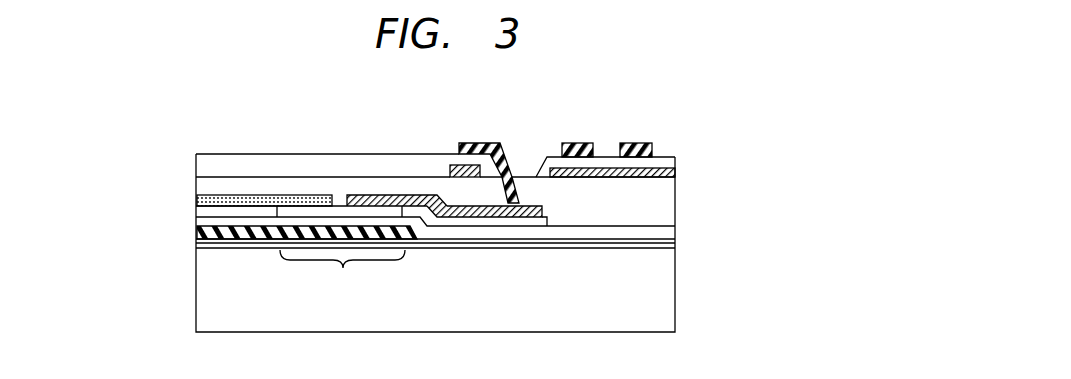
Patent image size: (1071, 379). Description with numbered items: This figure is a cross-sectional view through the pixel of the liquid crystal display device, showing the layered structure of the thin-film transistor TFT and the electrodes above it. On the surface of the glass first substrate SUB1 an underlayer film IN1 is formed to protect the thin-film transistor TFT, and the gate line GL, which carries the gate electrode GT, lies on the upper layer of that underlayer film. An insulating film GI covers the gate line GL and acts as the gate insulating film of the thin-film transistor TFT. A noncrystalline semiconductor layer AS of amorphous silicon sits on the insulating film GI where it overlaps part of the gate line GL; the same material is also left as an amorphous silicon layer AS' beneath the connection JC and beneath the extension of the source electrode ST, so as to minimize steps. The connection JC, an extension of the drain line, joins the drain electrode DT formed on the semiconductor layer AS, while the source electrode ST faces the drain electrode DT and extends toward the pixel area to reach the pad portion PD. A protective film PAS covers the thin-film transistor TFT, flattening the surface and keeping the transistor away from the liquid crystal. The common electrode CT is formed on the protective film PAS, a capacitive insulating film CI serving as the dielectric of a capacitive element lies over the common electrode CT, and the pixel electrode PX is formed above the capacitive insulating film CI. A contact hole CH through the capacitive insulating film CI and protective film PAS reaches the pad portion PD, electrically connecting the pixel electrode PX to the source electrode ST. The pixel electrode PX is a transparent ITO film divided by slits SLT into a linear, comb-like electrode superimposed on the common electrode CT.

The first substrate SUB1 is at (676, 298).
The undercoat insulating film IN1 is at (678, 246).
The insulating film GI is at (678, 232).
The gate line GL is at (233, 233).
The gate electrode GT is at (298, 235).
The thin-film transistor TFT is at (342, 273).
The amorphous silicon layer AS' is at (339, 292).
The drain electrode DT is at (290, 193).
The connection JC is at (235, 193).
The semiconductor layer AS is at (336, 155).
The source electrode ST is at (382, 195).
The pad portion PD is at (460, 217).
The protective film PAS is at (205, 188).
The common electrode CT is at (446, 165).
The capacitive insulating film CI is at (205, 167).
The contact hole CH is at (529, 175).
The pixel electrode PX is at (474, 142).
The slit SLT is at (607, 154).